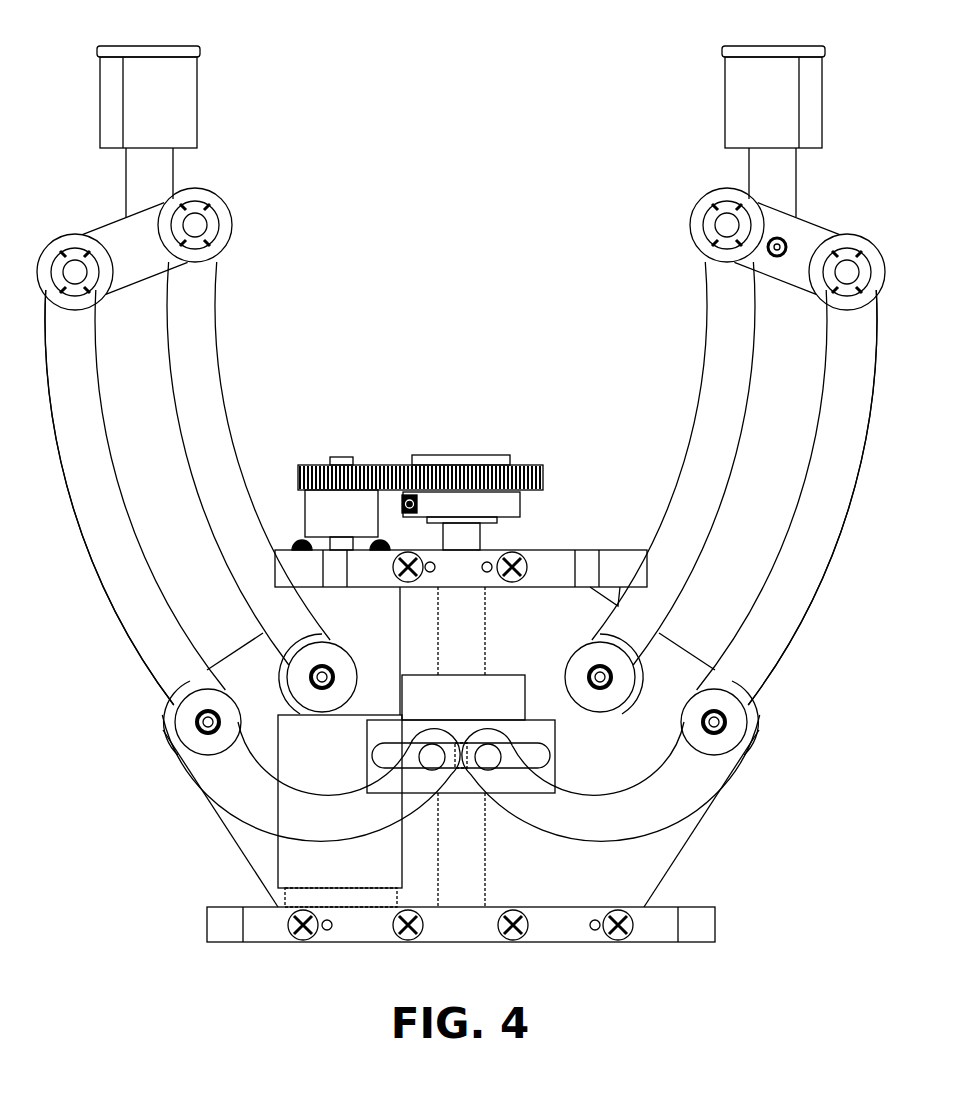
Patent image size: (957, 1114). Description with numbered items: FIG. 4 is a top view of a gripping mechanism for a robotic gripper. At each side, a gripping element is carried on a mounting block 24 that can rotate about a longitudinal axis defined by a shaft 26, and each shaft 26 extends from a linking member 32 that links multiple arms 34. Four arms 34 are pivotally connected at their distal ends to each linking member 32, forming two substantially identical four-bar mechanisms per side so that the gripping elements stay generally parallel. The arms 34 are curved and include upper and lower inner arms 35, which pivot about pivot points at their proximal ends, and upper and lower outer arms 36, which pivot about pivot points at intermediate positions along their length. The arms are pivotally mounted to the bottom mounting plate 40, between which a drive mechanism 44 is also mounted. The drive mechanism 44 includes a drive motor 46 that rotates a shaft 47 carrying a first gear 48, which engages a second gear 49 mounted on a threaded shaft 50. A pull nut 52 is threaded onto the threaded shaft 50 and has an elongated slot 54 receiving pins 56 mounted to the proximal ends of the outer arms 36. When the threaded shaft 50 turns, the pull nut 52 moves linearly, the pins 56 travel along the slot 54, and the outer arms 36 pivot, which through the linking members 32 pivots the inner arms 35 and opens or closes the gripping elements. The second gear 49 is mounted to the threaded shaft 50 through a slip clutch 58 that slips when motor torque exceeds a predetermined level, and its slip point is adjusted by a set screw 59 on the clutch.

The mounting block 24 is at (188, 70).
The shaft 26 is at (135, 172).
The linking member 32 is at (118, 238).
The arms 34 is at (250, 362).
The inner arms 35 is at (196, 452).
The outer arms 36 is at (82, 510).
The bottom mounting plate 40 is at (522, 884).
The drive mechanism 44 is at (428, 400).
The drive motor 46 is at (256, 846).
The shaft 47 is at (330, 538).
The first gear 48 is at (300, 470).
The second gear 49 is at (540, 470).
The threaded shaft 50 is at (470, 622).
The pull nut 52 is at (535, 732).
The elongated slot 54 is at (540, 760).
The pins 56 is at (487, 745).
The slip clutch 58 is at (512, 505).
The set screw 59 is at (400, 502).